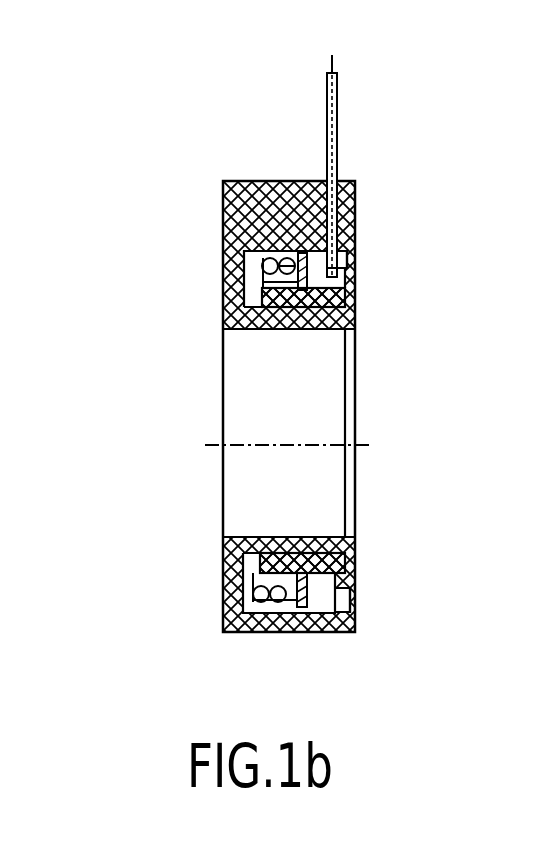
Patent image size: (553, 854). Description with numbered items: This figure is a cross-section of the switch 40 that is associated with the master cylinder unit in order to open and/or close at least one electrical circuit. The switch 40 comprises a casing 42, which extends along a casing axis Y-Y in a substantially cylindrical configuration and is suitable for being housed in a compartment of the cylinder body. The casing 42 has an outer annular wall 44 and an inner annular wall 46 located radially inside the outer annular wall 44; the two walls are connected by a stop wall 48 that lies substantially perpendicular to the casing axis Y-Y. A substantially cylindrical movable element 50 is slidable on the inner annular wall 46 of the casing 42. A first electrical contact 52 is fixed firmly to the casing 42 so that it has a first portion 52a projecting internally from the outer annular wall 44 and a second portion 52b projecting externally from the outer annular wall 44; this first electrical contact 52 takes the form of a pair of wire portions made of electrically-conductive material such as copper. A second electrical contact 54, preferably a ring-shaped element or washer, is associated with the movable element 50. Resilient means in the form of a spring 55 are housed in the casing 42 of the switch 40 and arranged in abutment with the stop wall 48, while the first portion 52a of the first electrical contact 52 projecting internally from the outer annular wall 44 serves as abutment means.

The switch 40 is at (198, 149).
The casing 42 is at (216, 213).
The outer annular wall 44 is at (273, 208).
The inner annular wall 46 is at (282, 329).
The stop wall 48 is at (245, 298).
The movable element 50 is at (347, 564).
The first electrical contact 52 is at (424, 148).
The first portion 52a is at (352, 250).
The second portion 52b is at (338, 134).
The second electrical contact 54 is at (327, 599).
The spring 55 is at (260, 594).
The casing axis Y is at (218, 447).